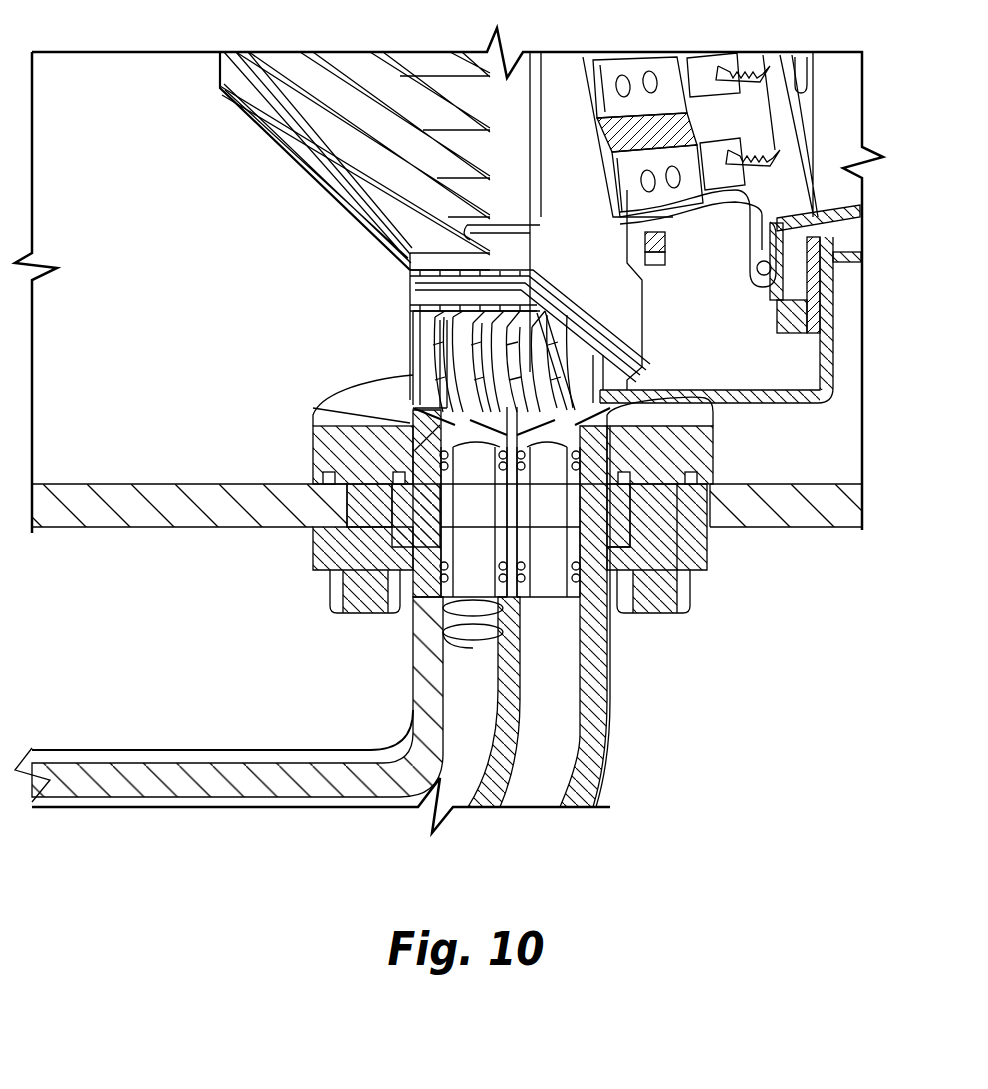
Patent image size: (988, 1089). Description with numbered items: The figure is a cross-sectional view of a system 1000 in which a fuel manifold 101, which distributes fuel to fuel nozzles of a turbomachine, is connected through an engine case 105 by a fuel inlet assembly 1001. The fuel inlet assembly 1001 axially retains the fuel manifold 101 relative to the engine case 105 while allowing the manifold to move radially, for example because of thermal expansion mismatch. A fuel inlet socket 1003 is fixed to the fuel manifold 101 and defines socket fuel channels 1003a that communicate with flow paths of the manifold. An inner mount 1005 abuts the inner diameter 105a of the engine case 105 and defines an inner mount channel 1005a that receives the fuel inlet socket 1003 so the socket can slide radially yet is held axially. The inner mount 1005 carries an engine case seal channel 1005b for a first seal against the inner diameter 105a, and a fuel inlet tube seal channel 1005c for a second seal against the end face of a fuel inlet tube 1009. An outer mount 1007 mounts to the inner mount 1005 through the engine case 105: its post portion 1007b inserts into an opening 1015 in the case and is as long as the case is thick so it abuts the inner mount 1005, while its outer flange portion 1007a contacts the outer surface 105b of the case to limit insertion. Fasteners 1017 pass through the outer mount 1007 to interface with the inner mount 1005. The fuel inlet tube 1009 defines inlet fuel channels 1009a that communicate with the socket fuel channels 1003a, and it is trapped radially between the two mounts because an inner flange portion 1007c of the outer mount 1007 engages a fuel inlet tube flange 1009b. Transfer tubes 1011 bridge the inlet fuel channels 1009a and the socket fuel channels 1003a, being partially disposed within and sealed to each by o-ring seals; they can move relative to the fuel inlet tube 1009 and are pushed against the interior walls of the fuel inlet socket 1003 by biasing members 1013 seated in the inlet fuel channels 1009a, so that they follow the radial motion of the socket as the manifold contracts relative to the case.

The system 1000 is at (92, 32).
The fuel manifold 101 is at (403, 218).
The engine case 105 is at (137, 508).
The inner diameter 105a is at (95, 484).
The outer surface 105b is at (55, 527).
The fuel inlet assembly 1001 is at (774, 611).
The fuel inlet socket 1003 is at (560, 440).
The socket fuel channels 1003a is at (533, 437).
The inner mount 1005 is at (370, 398).
The inner mount channel 1005a is at (367, 425).
The engine case seal channel 1005b is at (700, 484).
The fuel inlet tube seal channel 1005c is at (675, 500).
The outer mount 1007 is at (365, 542).
The outer flange portion 1007a is at (330, 545).
The post portion 1007b is at (373, 515).
The inner flange portion 1007c is at (613, 585).
The fuel inlet tube 1009 is at (588, 770).
The inlet fuel channels 1009a is at (468, 757).
The fuel inlet tube flange 1009b is at (405, 523).
The transfer tubes 1011 is at (440, 605).
The biasing members 1013 is at (478, 655).
The opening 1015 is at (710, 527).
The fastener 1017 is at (668, 600).